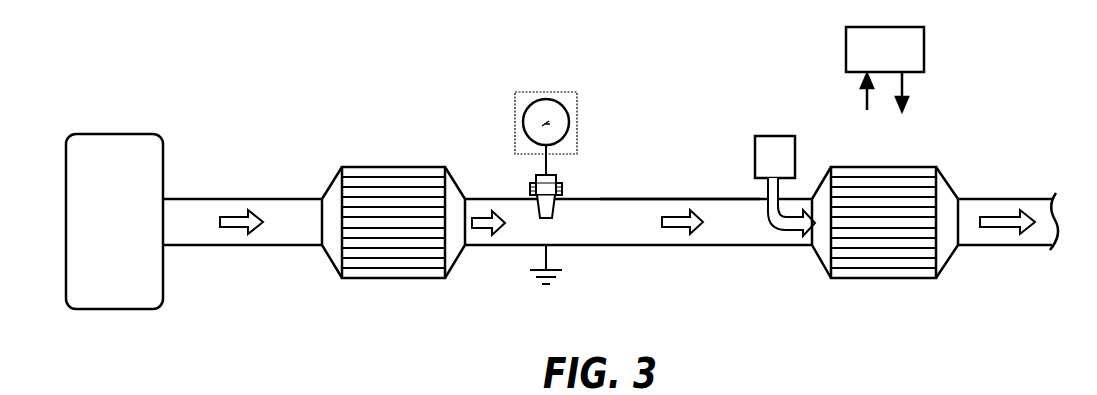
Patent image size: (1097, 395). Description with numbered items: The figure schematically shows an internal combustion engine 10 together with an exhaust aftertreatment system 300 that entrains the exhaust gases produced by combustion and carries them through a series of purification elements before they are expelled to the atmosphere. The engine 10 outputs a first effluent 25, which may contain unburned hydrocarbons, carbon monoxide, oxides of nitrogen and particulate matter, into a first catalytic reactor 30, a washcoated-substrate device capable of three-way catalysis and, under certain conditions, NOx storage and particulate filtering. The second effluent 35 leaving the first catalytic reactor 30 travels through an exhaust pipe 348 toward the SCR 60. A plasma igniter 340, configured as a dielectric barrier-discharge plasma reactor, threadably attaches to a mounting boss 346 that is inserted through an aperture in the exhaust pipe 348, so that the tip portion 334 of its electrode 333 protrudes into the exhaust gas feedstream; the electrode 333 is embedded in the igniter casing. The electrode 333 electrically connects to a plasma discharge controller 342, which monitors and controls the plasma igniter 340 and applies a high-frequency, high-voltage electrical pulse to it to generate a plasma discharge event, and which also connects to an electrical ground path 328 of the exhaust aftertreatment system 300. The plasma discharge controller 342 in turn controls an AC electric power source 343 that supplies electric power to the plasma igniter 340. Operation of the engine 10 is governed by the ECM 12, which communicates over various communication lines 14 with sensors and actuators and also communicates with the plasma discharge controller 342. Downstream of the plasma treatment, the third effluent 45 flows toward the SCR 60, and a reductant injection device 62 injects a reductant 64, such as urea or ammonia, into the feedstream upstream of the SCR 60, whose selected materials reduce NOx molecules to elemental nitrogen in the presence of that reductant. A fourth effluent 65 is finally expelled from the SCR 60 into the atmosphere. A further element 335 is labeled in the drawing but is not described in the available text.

The internal combustion engine 10 is at (120, 148).
The first effluent 25 is at (233, 228).
The first catalytic reactor 30 is at (396, 182).
The second effluent 35 is at (483, 228).
The plasma igniter 340 is at (525, 189).
The plasma discharge controller 342 is at (578, 108).
The AC electric power source 343 is at (543, 120).
The mounting boss 346 is at (562, 195).
The tip portion 334 is at (548, 220).
The electrical ground path 328 is at (550, 283).
The exhaust aftertreatment system 300 is at (672, 96).
The exhaust pipe 348 is at (717, 198).
The third effluent 45 is at (683, 228).
The reductant injection device 62 is at (775, 136).
The reductant 64 is at (792, 233).
The SCR 60 is at (886, 237).
The fourth effluent 65 is at (998, 228).
The ECM 12 is at (897, 61).
The communication lines 14 is at (907, 82).
The electrode 333 is at (972, 394).
The sensor element (adjacent figure) 335 is at (1019, 394).